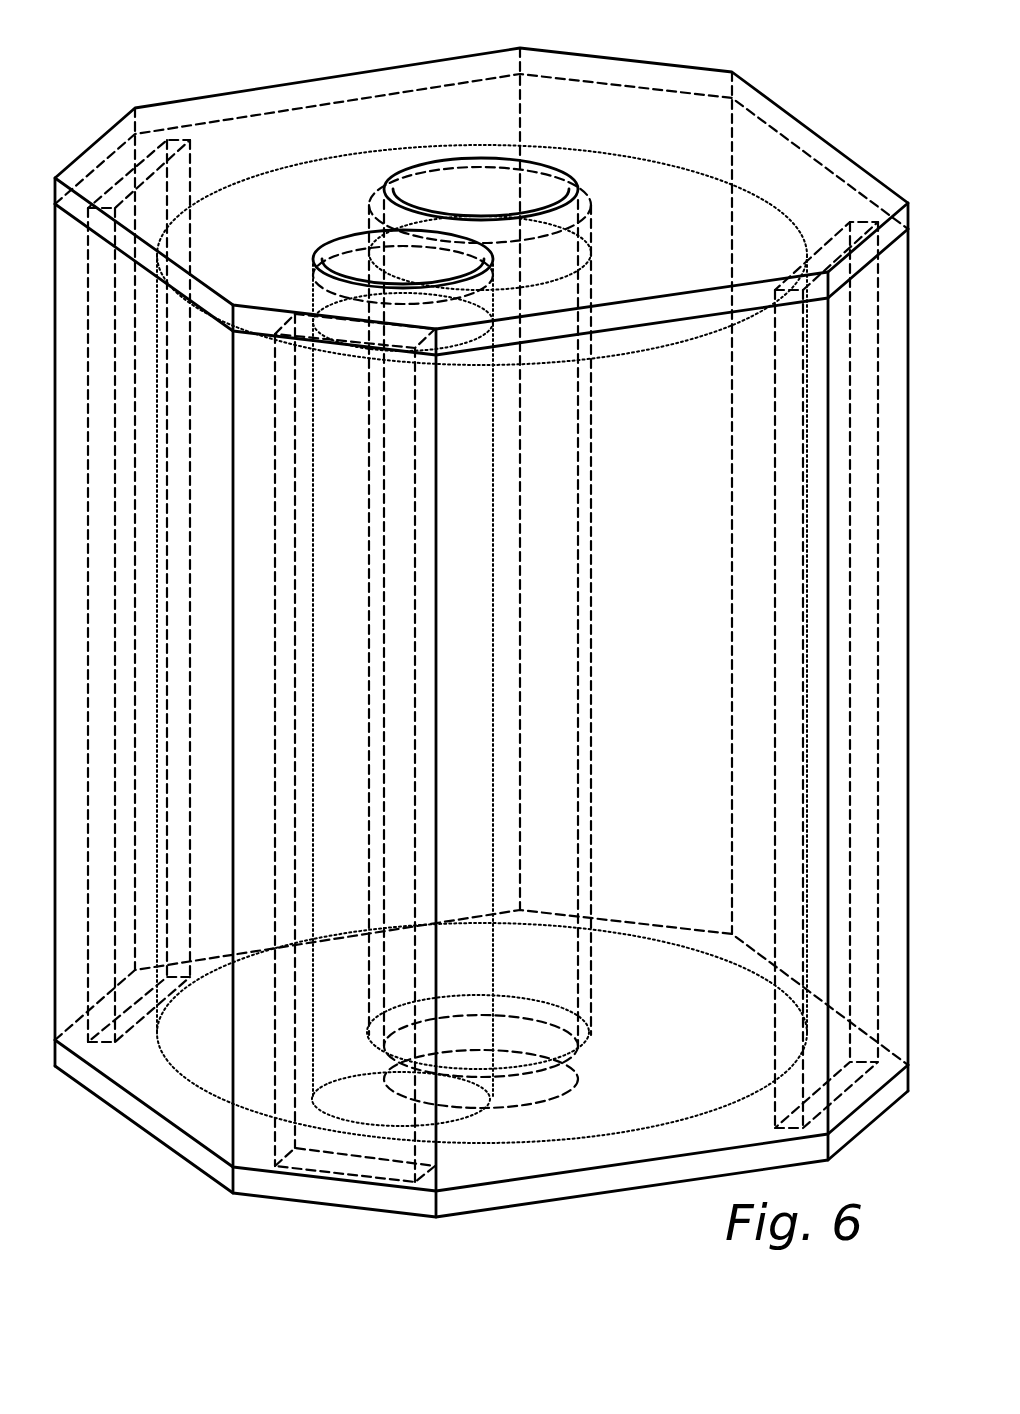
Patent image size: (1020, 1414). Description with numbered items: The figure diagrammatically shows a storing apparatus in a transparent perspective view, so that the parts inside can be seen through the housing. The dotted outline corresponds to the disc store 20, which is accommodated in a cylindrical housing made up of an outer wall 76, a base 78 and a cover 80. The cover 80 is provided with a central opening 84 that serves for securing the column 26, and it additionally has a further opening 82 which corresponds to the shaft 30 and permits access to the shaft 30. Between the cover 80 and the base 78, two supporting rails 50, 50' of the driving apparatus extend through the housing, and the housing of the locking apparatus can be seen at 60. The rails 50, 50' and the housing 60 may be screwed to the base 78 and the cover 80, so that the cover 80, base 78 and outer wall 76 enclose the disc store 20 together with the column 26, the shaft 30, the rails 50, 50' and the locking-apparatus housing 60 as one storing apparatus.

The disc store 20 is at (646, 150).
The column 26 is at (587, 410).
The shaft 30 is at (495, 561).
The supporting rail 50 is at (855, 680).
The supporting rail 50' is at (117, 633).
The housing of the locking apparatus 60 is at (298, 1167).
The outer wall 76 is at (896, 260).
The base 78 is at (540, 1196).
The cover 80 is at (286, 97).
The further opening 82 is at (322, 246).
The central opening 84 is at (546, 162).